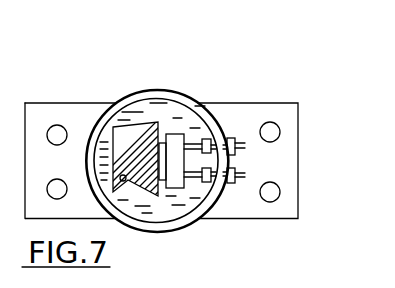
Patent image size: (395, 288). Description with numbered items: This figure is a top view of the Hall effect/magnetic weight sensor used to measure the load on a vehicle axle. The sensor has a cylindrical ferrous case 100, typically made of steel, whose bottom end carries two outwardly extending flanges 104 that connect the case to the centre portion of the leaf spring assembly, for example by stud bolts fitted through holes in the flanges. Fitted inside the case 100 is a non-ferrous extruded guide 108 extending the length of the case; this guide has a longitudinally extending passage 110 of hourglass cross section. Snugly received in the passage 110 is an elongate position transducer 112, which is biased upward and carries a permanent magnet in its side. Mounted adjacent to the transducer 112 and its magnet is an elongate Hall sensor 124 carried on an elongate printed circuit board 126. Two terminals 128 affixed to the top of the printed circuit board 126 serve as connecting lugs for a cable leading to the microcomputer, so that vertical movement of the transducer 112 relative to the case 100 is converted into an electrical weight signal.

The ferrous case 100 is at (141, 92).
The flanges 104 is at (54, 113).
The extruded guide 108 is at (177, 204).
The passage 110 is at (123, 182).
The position transducer 112 is at (143, 172).
The Hall sensor 124 is at (185, 147).
The printed circuit board 126 is at (177, 142).
The terminals 128 is at (245, 145).